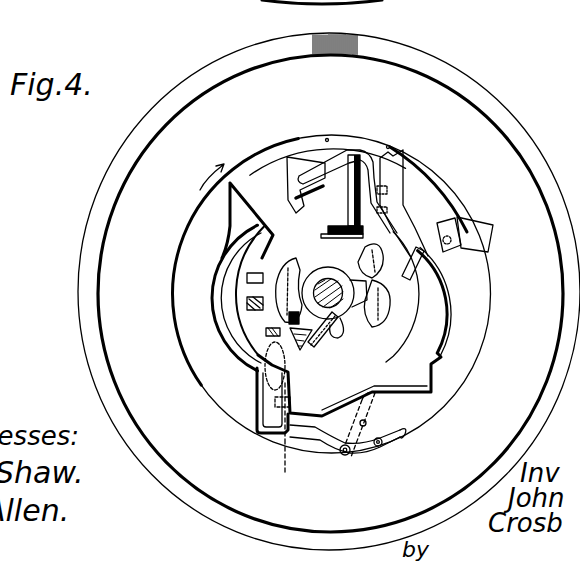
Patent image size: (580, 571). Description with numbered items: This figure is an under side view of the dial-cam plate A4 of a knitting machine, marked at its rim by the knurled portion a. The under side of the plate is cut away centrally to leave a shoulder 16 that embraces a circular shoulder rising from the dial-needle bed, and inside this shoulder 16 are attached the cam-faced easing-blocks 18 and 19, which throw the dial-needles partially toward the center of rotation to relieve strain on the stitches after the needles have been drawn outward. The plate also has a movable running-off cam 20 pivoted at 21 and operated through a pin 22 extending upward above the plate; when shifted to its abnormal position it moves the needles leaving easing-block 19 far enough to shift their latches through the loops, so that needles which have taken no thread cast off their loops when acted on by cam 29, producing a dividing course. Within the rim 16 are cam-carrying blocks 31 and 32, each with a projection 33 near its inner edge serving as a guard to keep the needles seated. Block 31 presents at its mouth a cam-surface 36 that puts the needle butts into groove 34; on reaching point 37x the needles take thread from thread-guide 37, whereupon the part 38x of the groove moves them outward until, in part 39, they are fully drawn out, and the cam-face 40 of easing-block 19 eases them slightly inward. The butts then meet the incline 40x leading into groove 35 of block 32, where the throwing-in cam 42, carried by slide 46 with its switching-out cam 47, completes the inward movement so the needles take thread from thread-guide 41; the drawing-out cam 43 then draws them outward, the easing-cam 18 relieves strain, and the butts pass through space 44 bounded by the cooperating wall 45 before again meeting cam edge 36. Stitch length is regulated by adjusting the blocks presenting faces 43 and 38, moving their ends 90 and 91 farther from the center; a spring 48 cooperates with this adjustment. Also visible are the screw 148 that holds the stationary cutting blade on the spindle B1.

The dial-cam plate A4 is at (465, 108).
The knurled portion a is at (358, 37).
The shoulder 16 is at (167, 317).
The easing-block 18 is at (413, 157).
The easing-block 19 is at (278, 444).
The running-off cam 20 is at (406, 432).
The pivot 21 is at (346, 456).
The pin 22 is at (380, 446).
The cam 29 is at (397, 388).
The cam-carrying block 31 is at (193, 353).
The cam-carrying block 32 is at (430, 200).
The projection 33 is at (247, 266).
The groove 34 is at (217, 323).
The groove 35 is at (448, 314).
The cam-surface 36 is at (232, 192).
The thread-guide 37 is at (292, 345).
The point 37x is at (257, 373).
The block 38 is at (273, 410).
The part of the cam-groove 38x is at (262, 391).
The part of the grooves 39 is at (267, 430).
The cam-face 40 is at (298, 432).
The incline 40x is at (438, 360).
The thread-guide 41 is at (363, 250).
The throwing-in cam 42 is at (447, 230).
The drawing-out cam 43 is at (397, 183).
The space 44 is at (340, 155).
The wall 45 is at (324, 165).
The slide 46 is at (473, 240).
The switching-out cam 47 is at (417, 247).
The spring 48 is at (408, 262).
The end 90 is at (392, 160).
The end 91 is at (290, 452).
The screw 148 is at (335, 318).
The spindle B1 is at (318, 270).